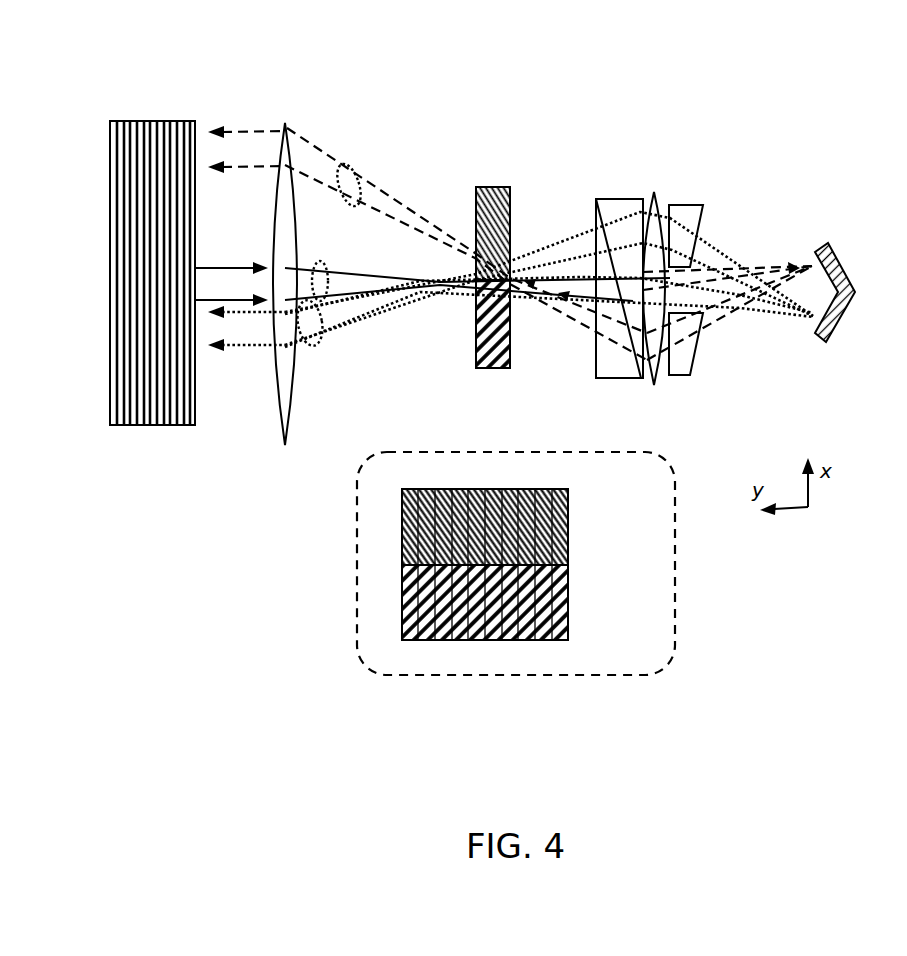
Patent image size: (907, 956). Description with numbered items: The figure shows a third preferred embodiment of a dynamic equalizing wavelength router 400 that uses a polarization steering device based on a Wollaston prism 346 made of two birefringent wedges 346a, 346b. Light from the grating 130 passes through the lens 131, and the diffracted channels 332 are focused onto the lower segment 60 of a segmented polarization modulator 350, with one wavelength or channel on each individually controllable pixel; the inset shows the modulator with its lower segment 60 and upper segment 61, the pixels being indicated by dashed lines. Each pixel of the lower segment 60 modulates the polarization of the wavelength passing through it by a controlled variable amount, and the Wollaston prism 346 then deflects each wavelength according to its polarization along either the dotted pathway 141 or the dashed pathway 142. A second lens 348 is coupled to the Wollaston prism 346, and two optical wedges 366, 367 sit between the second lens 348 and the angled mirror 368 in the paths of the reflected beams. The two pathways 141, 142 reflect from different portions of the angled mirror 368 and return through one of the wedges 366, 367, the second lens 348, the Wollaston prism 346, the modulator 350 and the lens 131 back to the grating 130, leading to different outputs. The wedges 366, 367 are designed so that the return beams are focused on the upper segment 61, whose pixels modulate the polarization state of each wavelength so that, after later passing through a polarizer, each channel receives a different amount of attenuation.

The dynamic equalizing wavelength router 400 is at (143, 36).
The grating 130 is at (130, 121).
The lens 131 is at (283, 124).
The pathway 142 is at (352, 165).
The diffracted channels 332 is at (321, 262).
The pathway 141 is at (318, 343).
The segmented polarization modulator 350 is at (478, 173).
The upper segment 61 is at (587, 515).
The lower segment 60 is at (587, 609).
The Wollaston prism 346 is at (609, 136).
The birefringent wedge 346a is at (630, 198).
The birefringent wedge 346b is at (597, 378).
The second lens 348 is at (657, 194).
The optical wedge 367 is at (703, 210).
The optical wedge 366 is at (703, 372).
The angled mirror 368 is at (828, 246).